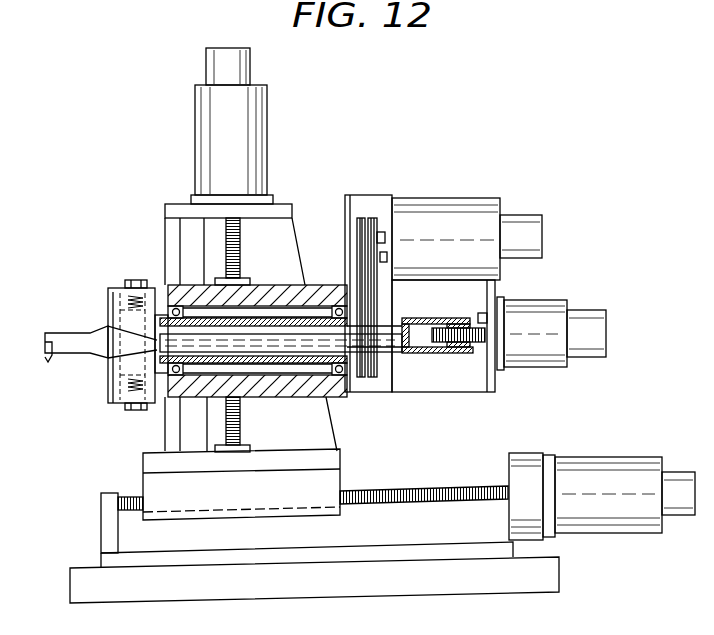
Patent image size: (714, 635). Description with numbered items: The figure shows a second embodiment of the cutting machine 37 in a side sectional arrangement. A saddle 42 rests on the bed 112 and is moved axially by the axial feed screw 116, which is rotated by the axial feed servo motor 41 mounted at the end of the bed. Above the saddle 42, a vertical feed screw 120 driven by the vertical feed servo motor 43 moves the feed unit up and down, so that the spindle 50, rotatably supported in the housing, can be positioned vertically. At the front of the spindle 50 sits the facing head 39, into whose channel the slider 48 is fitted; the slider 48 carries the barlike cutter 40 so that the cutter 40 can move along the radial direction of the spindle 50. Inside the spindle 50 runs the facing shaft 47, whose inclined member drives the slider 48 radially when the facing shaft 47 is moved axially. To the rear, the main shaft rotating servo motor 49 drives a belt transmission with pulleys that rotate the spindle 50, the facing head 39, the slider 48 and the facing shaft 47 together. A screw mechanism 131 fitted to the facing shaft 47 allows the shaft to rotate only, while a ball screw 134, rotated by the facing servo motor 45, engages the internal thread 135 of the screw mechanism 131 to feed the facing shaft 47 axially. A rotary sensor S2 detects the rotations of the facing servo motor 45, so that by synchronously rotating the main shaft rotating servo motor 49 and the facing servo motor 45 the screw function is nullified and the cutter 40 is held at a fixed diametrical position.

The cutting machine 37 is at (160, 234).
The facing head 39 is at (130, 346).
The cutter 40 is at (72, 331).
The axial feed servo motor 41 is at (578, 455).
The saddle 42 is at (342, 480).
The vertical feed servo motor 43 is at (268, 172).
The facing servo motor 45 is at (528, 371).
The facing shaft 47 is at (270, 350).
The slider 48 is at (118, 408).
The main shaft rotating servo motor 49 is at (468, 197).
The spindle 50 is at (304, 360).
The bed 112 is at (563, 557).
The axial feed screw 116 is at (418, 487).
The vertical feed screw 120 is at (240, 262).
The screw mechanism 131 is at (428, 318).
The ball screw 134 is at (483, 348).
The internal thread 135 is at (468, 318).
The rotary sensor S2 is at (388, 256).